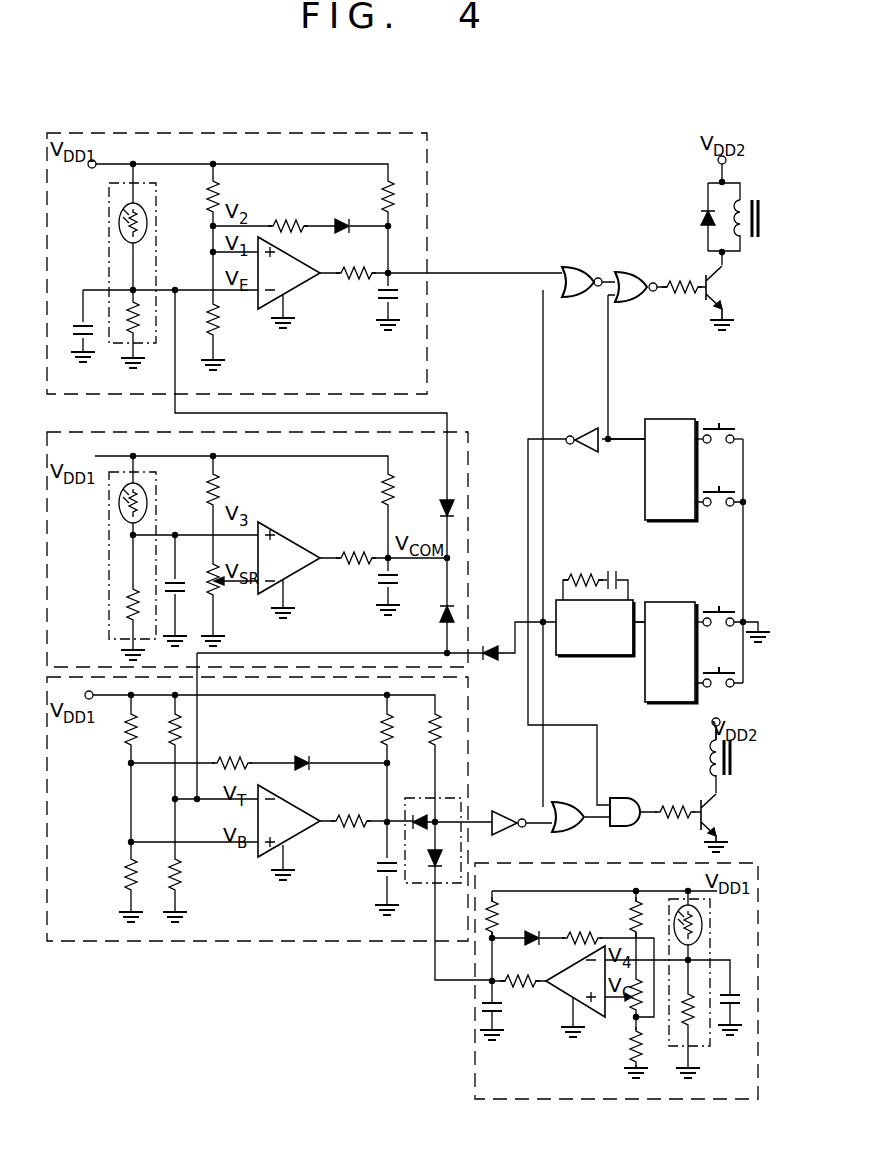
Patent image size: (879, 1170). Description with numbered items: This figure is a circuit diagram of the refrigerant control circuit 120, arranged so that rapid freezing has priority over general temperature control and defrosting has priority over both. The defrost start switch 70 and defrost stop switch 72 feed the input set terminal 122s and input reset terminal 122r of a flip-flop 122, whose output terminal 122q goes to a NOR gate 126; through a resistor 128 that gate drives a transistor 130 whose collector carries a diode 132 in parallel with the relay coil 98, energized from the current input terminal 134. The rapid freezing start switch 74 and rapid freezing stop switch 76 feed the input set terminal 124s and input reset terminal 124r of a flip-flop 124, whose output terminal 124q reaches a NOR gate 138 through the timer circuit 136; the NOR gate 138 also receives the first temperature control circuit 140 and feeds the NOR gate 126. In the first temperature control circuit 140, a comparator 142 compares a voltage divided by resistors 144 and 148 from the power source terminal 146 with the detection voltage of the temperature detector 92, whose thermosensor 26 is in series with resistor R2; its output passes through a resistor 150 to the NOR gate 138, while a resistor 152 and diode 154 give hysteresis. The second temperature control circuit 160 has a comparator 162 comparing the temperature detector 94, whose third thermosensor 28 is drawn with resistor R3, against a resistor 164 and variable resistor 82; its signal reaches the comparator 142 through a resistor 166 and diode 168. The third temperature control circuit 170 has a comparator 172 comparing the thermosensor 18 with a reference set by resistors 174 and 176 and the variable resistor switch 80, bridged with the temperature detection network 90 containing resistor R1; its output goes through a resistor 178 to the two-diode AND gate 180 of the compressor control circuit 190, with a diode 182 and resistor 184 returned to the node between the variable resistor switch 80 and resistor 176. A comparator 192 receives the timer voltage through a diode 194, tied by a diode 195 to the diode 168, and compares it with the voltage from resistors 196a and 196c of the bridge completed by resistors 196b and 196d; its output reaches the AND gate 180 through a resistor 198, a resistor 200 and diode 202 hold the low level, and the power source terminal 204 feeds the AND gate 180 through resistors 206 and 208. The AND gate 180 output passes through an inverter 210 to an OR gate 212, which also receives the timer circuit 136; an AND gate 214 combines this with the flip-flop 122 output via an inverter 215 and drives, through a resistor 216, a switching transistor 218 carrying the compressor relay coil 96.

The first temperature control circuit 140 is at (285, 133).
The refrigerant control circuit 120 is at (480, 150).
The power source terminal 146 is at (89, 168).
The thermosensor 26 is at (146, 229).
The temperature detector 92 is at (108, 270).
The resistor 144 is at (214, 185).
The resistor 152 is at (280, 220).
The diode 154 is at (343, 218).
The comparator 142 is at (294, 288).
The resistor 150 is at (355, 280).
The resistor 148 is at (214, 330).
The resistor R2 is at (122, 320).
The NOR gate 138 is at (576, 270).
The NOR gate 126 is at (628, 282).
The resistor 128 is at (681, 294).
The transistor 130 is at (709, 304).
The diode 132 is at (700, 228).
The current input terminal 134 is at (716, 162).
The relay coil 98 is at (752, 240).
The inverter 215 is at (582, 434).
The flip-flop 122 is at (667, 441).
The output terminal 122q is at (640, 432).
The input set terminal 122s is at (700, 430).
The defrost start switch 70 is at (720, 428).
The defrost stop switch 72 is at (718, 492).
The input reset terminal 122r is at (698, 505).
The flip-flop 124 is at (668, 606).
The output terminal 124q is at (644, 610).
The input set terminal 124s is at (702, 612).
The rapid freezing start switch 74 is at (718, 612).
The rapid freezing stop switch 76 is at (718, 676).
The input reset terminal 124r is at (698, 690).
The timer circuit 136 is at (592, 655).
The relay coil 96 is at (712, 758).
The OR gate 212 is at (568, 800).
The AND gate 214 is at (620, 798).
The resistor 216 is at (664, 806).
The switching transistor 218 is at (700, 826).
The inverter 210 is at (500, 810).
The diode 194 is at (490, 662).
The second temperature control circuit 160 is at (466, 430).
The diode 168 is at (440, 502).
The resistor 164 is at (214, 480).
The comparator 162 is at (298, 542).
The resistor 166 is at (352, 565).
The third thermosensor 28 is at (110, 503).
The temperature detector 94 is at (108, 566).
The resistor R3 is at (126, 604).
The variable resistor 82 is at (214, 592).
The diode 195 is at (440, 615).
The compressor control circuit 190 is at (256, 944).
The power source terminal 204 is at (92, 700).
The resistor 196a is at (128, 742).
The resistor 196b is at (178, 722).
The resistor 200 is at (234, 750).
The diode 202 is at (298, 738).
The resistor 206 is at (382, 722).
The resistor 208 is at (442, 730).
The two-input AND gate 180 is at (414, 796).
The resistor 198 is at (350, 818).
The comparator 192 is at (296, 836).
The resistor 196c is at (124, 872).
The resistor 196d is at (182, 876).
The third temperature control circuit 170 is at (474, 1074).
The resistor 174 is at (630, 906).
The diode 182 is at (530, 932).
The resistor 184 is at (578, 932).
The resistor 178 is at (516, 978).
The comparator 172 is at (558, 994).
The variable resistor switch 80 is at (630, 1006).
The resistor 176 is at (630, 1048).
The thermosensor 18 is at (701, 922).
The temperature detection network 90 is at (712, 940).
The resistor R1 is at (692, 1030).